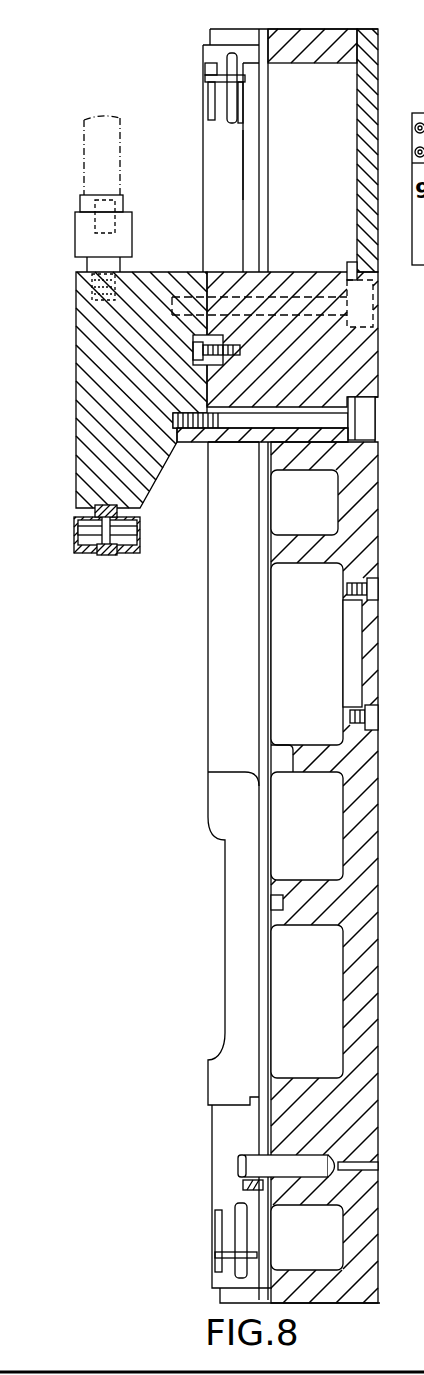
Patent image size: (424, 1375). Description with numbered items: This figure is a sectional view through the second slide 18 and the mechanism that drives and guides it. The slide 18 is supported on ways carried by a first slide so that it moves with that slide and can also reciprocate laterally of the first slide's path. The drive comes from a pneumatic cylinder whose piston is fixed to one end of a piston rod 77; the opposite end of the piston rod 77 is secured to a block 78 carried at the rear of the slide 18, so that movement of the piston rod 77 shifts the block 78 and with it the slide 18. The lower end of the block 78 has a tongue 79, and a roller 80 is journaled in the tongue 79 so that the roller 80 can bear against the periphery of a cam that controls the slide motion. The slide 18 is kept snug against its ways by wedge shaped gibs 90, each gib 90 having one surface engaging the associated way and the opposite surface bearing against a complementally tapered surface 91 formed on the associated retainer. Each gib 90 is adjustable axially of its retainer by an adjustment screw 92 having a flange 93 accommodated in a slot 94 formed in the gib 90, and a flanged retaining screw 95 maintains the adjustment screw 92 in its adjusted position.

The second slide 18 is at (380, 468).
The piston rod 77 is at (125, 160).
The block 78 is at (152, 272).
The tongue 79 is at (78, 546).
The roller 80 is at (110, 557).
The wedge shaped gib 90 is at (262, 183).
The tapered surface 91 is at (248, 157).
The adjustment screw 92 is at (233, 107).
The flange 93 is at (227, 83).
The slot 94 is at (243, 86).
The flanged retaining screw 95 is at (207, 67).